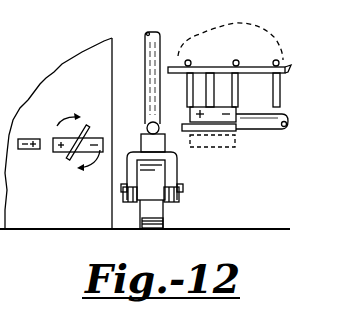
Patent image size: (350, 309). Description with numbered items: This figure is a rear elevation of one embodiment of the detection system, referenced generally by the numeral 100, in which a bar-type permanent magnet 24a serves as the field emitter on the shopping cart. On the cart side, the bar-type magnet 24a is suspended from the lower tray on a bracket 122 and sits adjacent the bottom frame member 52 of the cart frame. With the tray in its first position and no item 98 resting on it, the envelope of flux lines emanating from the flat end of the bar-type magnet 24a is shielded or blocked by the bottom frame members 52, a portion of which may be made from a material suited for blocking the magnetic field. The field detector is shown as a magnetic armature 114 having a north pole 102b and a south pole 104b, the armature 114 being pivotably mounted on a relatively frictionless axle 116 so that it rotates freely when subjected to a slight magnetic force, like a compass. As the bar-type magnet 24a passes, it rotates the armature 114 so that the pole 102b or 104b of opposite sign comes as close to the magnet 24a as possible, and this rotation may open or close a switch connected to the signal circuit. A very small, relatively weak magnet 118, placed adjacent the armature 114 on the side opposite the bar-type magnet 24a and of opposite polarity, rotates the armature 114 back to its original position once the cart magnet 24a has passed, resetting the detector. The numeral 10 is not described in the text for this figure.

The apparatus 10 is at (61, 4).
The small magnet 118 is at (27, 137).
The south pole 104b is at (102, 138).
The north pole 102b is at (54, 153).
The axle 116 is at (68, 162).
The magnetic armature 114 is at (53, 150).
The item 98 is at (217, 33).
The bottom frame members 52 is at (160, 134).
The bracket 122 is at (215, 92).
The bar-type permanent magnet 24a is at (233, 93).
The embodiment 100 is at (206, 197).